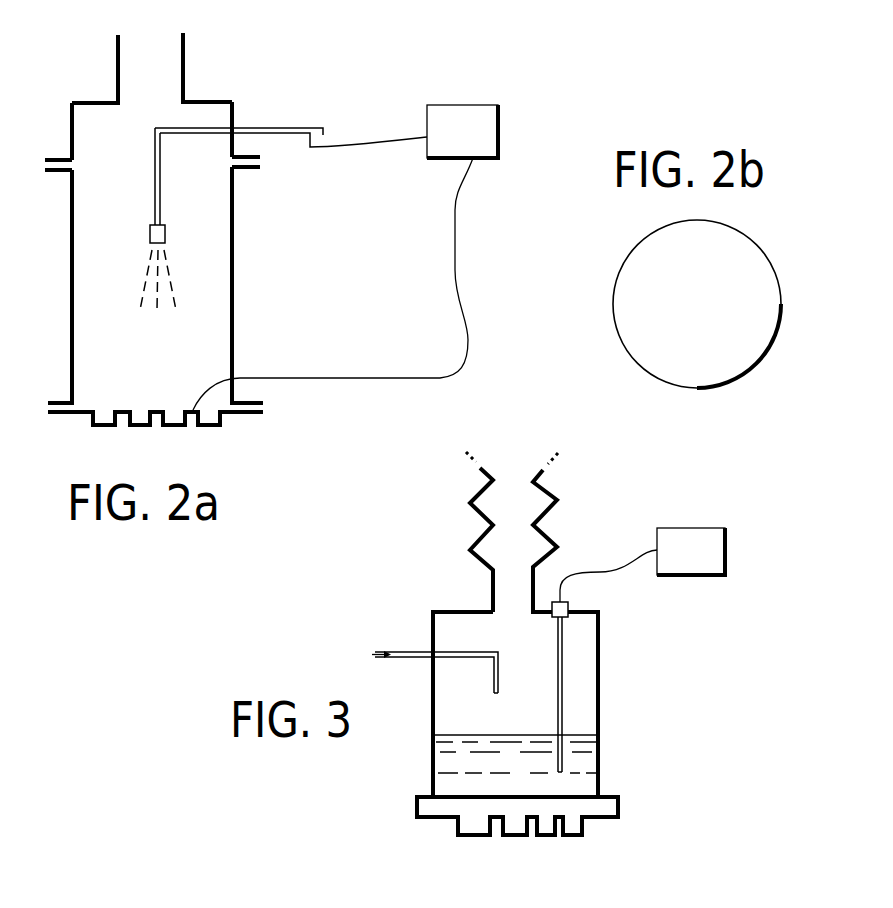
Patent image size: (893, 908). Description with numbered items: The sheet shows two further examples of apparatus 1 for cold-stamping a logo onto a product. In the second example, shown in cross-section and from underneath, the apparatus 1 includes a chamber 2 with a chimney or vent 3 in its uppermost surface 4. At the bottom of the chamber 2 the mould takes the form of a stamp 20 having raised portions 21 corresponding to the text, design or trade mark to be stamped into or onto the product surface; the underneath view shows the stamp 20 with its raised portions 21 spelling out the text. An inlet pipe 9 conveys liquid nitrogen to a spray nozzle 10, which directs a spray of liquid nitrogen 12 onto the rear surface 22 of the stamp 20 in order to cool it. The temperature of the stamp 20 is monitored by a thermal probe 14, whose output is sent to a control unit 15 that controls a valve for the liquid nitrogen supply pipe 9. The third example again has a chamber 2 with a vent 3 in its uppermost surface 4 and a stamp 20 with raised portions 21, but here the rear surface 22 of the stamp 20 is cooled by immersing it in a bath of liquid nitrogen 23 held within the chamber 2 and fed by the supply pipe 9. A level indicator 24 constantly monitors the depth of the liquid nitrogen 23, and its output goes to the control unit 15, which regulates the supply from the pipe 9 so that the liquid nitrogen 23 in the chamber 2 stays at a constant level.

In FIG. 2A, the apparatus 1 is at (164, 209).
In FIG. 3, the apparatus 1 is at (522, 624).
In FIG. 2A, the chamber 2 is at (236, 226).
In FIG. 3, the chamber 2 is at (600, 635).
In FIG. 2A, the chimney or vent 3 is at (185, 52).
In FIG. 3, the chimney or vent 3 is at (548, 517).
In FIG. 2A, the uppermost surface 4 is at (95, 102).
In FIG. 3, the uppermost surface 4 is at (449, 612).
In FIG. 2A, the inlet pipe 9 is at (278, 128).
In FIG. 3, the inlet pipe 9 is at (413, 652).
In FIG. 2A, the spray nozzle 10 is at (150, 228).
In FIG. 2A, the liquid nitrogen 12 is at (186, 285).
In FIG. 2A, the thermal probe 14 is at (192, 404).
In FIG. 2A, the control unit 15 is at (427, 112).
In FIG. 3, the control unit 15 is at (725, 565).
In FIG. 2A, the stamp 20 is at (250, 414).
In FIG. 2B, the stamp 20 is at (750, 252).
In FIG. 3, the stamp 20 is at (607, 806).
In FIG. 2A, the raised portions 21 is at (105, 426).
In FIG. 2B, the raised portions 21 is at (660, 310).
In FIG. 3, the raised portions 21 is at (470, 835).
In FIG. 2A, the rear surface 22 is at (127, 402).
In FIG. 3, the rear surface 22 is at (448, 797).
In FIG. 3, the bath of liquid nitrogen 23 is at (443, 760).
In FIG. 3, the level indicator 24 is at (565, 705).